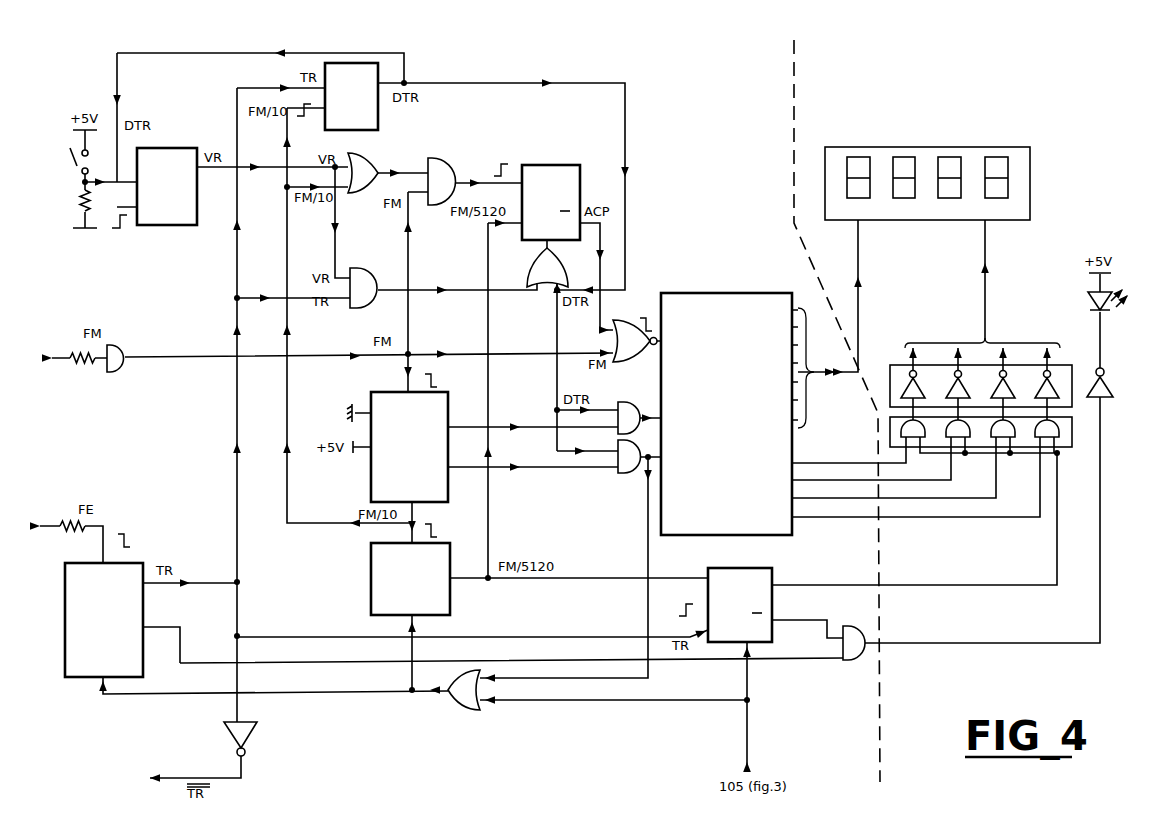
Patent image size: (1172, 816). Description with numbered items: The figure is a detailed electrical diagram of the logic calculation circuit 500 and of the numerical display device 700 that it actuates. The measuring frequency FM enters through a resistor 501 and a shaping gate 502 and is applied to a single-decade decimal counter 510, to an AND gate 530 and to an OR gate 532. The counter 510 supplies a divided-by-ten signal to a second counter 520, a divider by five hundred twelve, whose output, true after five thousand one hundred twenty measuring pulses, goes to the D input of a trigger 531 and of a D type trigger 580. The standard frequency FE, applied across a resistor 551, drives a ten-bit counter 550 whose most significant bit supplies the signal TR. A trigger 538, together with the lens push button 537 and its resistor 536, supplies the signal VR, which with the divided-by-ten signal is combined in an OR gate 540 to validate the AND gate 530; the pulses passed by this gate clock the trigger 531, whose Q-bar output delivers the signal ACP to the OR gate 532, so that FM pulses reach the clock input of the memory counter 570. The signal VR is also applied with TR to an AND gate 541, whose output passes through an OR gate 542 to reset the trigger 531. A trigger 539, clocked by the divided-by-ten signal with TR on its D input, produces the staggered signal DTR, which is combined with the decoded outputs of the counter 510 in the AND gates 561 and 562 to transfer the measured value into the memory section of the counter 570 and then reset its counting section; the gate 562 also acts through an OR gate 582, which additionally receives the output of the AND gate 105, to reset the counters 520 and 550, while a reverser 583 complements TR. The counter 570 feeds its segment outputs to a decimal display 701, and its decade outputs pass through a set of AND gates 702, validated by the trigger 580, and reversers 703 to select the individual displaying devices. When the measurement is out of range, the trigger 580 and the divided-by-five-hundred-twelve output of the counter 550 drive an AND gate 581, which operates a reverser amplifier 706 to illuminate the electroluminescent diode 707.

The logic calculation circuit 500 is at (729, 122).
The resistor 501 is at (84, 364).
The shaping gate 502 is at (118, 375).
The decimal counter 510 is at (448, 392).
The second counter 520 is at (445, 543).
The AND gate 530 is at (445, 158).
The trigger 531 is at (552, 165).
The OR gate 532 is at (638, 320).
The pull-down resistor 536 is at (80, 206).
The lens push button 537 is at (70, 158).
The trigger 538 is at (175, 148).
The trigger 539 is at (380, 118).
The OR gate 540 is at (362, 193).
The AND gate 541 is at (380, 258).
The OR gate 542 is at (534, 265).
The counter 550 is at (143, 563).
The input resistor 551 is at (70, 532).
The AND gate 561 is at (638, 390).
The AND gate 562 is at (630, 473).
The memory counter 570 is at (728, 293).
The D type trigger 580 is at (762, 568).
The AND gate 581 is at (853, 626).
The OR gate 582 is at (462, 709).
The reverser 583 is at (248, 742).
The numerical display device 700 is at (846, 114).
The decimal display 701 is at (955, 147).
The set of AND gates 702 is at (1072, 447).
The reversers 703 is at (1063, 365).
The reverser amplifier 706 is at (1108, 380).
The electroluminescent diode 707 is at (1086, 298).
The AND gate 105 is at (733, 781).